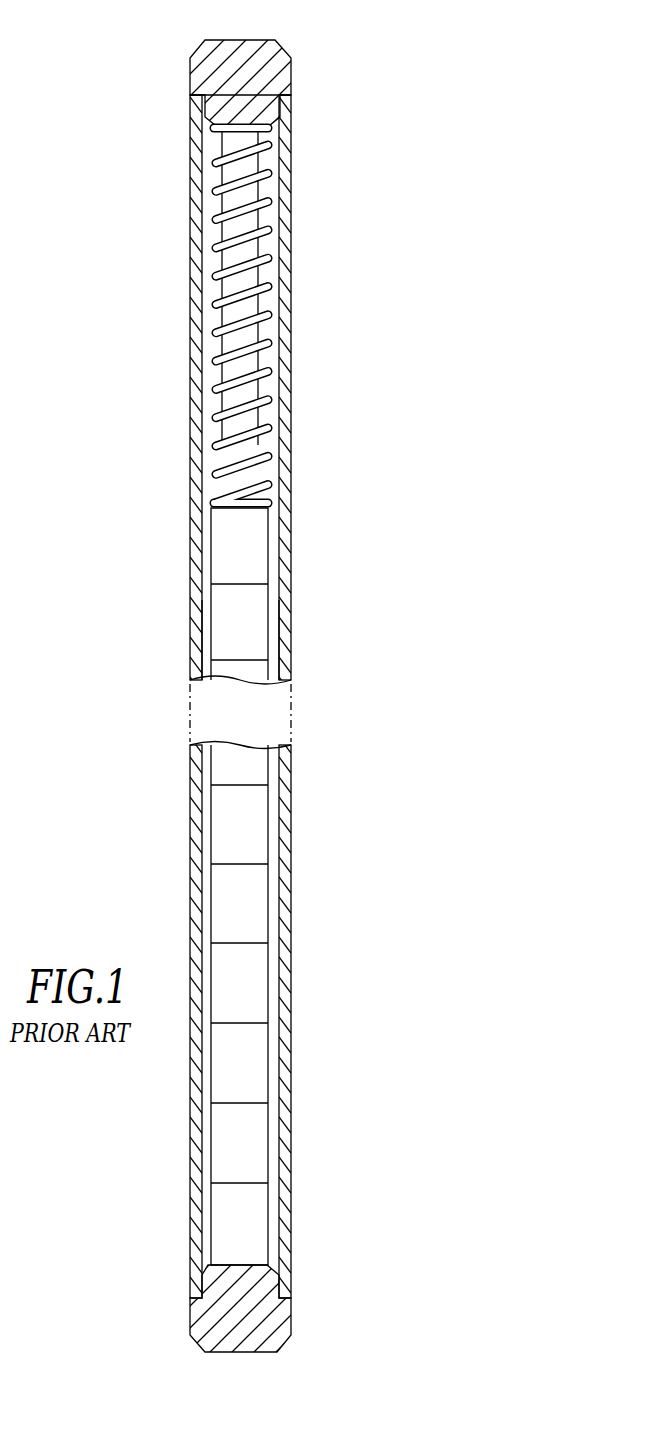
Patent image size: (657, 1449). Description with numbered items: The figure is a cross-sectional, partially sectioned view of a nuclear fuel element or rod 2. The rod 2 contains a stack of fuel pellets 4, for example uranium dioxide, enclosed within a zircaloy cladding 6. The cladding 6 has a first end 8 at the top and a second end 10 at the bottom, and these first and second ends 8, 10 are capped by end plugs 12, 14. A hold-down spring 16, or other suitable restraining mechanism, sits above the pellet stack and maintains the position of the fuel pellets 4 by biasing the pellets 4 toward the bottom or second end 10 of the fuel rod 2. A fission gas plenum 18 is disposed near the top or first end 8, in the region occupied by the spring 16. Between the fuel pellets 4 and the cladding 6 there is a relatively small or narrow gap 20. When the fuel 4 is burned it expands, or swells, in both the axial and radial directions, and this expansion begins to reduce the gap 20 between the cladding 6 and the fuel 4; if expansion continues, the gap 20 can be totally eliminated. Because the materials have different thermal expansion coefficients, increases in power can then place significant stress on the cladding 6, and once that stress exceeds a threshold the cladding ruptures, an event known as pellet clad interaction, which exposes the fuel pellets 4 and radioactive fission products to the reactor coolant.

The nuclear fuel element or rod 2 is at (350, 1296).
The fuel pellets 4 is at (263, 548).
The zircaloy cladding 6 is at (288, 912).
The first end 8 is at (180, 59).
The second end 10 is at (190, 1312).
The end plug 12 is at (285, 50).
The end plug 14 is at (168, 1345).
The hold-down spring 16 is at (272, 292).
The fission gas plenum 18 is at (175, 125).
The gap 20 is at (275, 652).